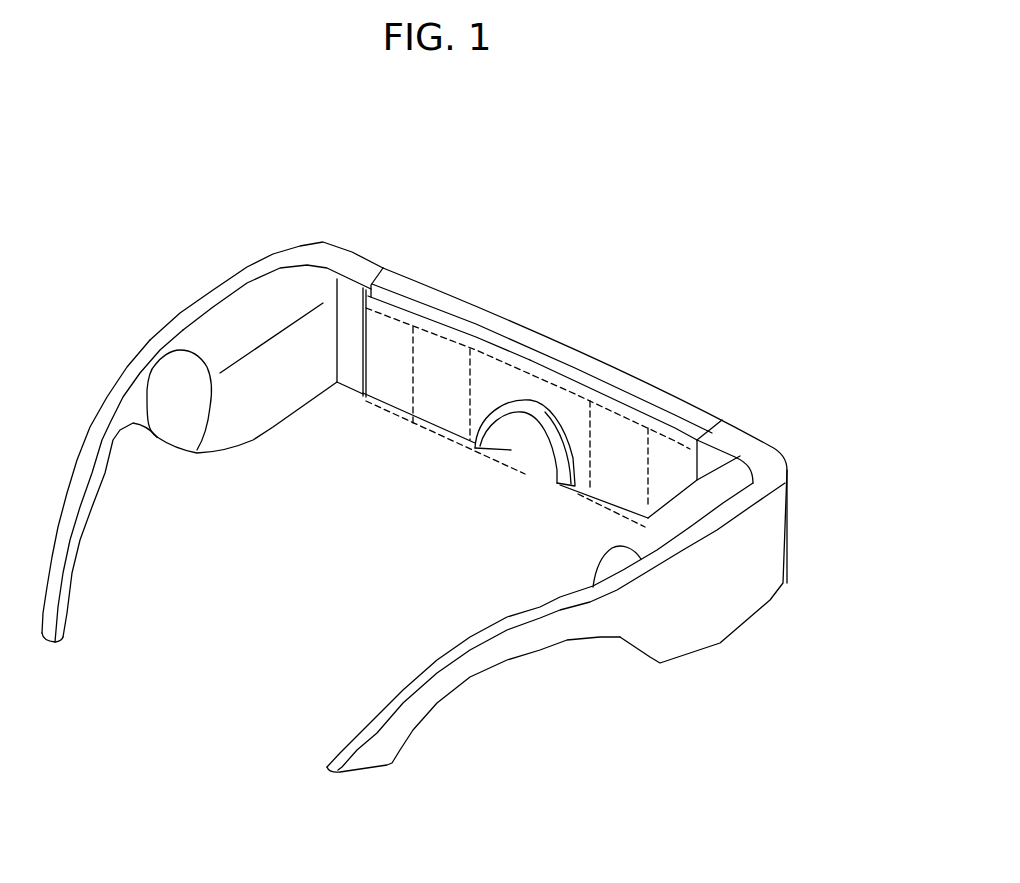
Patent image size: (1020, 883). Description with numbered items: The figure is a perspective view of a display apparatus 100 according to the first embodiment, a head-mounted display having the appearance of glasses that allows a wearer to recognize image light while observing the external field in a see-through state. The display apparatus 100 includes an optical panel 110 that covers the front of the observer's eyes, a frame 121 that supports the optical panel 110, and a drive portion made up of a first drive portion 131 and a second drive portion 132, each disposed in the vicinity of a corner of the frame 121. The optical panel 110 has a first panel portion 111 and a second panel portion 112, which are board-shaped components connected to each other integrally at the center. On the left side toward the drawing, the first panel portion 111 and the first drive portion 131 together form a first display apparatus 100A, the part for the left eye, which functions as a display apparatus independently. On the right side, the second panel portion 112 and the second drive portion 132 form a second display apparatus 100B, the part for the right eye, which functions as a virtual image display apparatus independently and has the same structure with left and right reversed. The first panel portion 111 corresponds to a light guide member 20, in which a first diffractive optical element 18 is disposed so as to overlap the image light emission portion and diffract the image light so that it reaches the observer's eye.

The display apparatus 100 is at (576, 82).
The first display apparatus 100A is at (400, 230).
The second display apparatus 100B is at (716, 360).
The first diffractive optical element 18 is at (427, 337).
The light guide member 20 is at (458, 430).
The optical panel 110 is at (537, 390).
The first panel portion 111 is at (390, 403).
The second panel portion 112 is at (592, 490).
The frame 121 is at (350, 265).
The first drive portion 131 is at (233, 327).
The second drive portion 132 is at (723, 487).